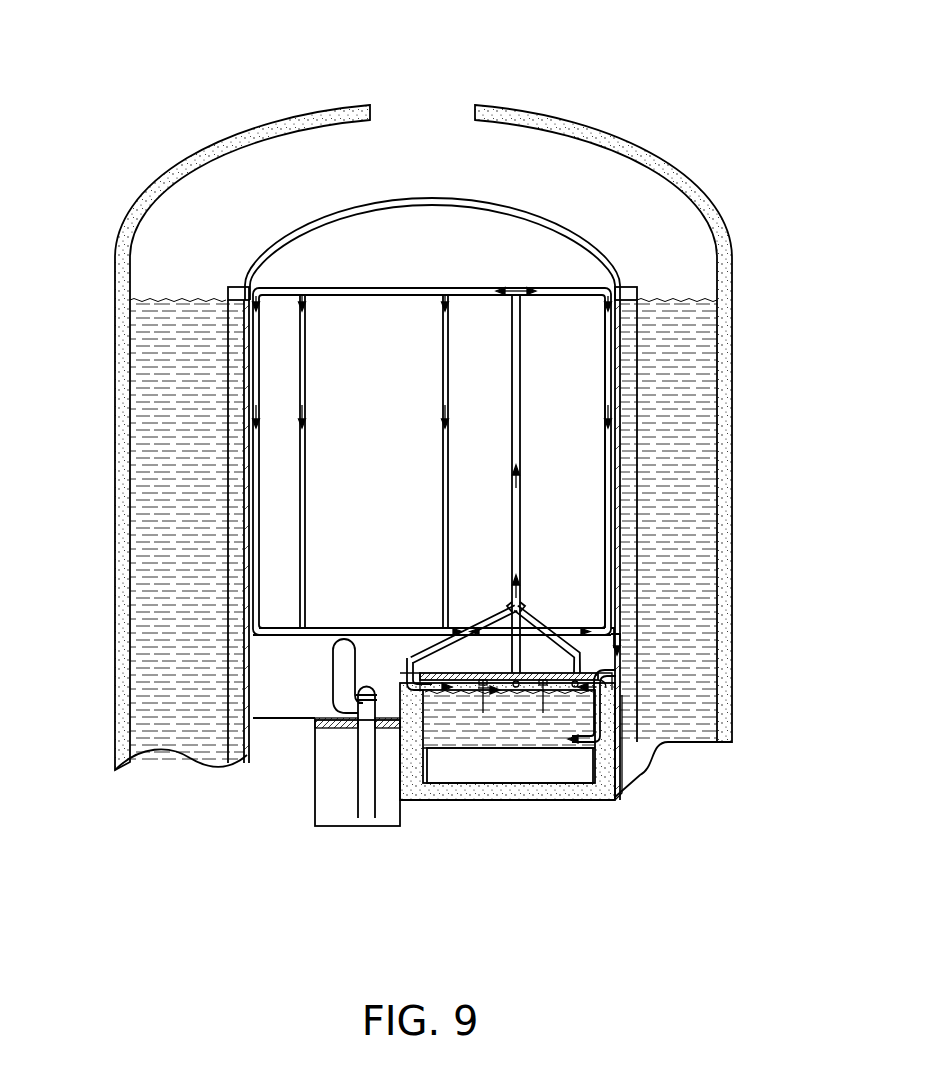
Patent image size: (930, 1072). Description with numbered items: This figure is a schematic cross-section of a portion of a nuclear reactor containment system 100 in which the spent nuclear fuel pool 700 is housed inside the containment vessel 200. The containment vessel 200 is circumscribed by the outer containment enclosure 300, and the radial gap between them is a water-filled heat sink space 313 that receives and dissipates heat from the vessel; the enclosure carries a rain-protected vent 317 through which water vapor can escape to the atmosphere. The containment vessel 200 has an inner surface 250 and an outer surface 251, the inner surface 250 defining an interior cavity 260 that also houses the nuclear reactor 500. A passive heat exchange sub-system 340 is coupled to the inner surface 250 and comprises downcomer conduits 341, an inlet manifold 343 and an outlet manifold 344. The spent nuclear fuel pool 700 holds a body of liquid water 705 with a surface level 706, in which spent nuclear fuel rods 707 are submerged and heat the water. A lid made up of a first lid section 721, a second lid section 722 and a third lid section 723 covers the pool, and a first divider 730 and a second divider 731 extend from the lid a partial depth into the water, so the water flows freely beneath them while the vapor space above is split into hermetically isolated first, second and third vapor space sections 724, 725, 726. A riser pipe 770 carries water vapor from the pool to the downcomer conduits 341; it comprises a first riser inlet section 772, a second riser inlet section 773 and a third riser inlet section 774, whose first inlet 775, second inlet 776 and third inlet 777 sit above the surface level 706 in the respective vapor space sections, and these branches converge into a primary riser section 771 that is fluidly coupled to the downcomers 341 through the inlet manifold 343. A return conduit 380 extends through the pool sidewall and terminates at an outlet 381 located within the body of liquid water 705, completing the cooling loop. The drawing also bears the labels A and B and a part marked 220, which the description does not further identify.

The nuclear reactor containment system 100 is at (203, 60).
The containment vessel 200 is at (630, 293).
The inner container 220 is at (228, 297).
The inner surface 250 is at (607, 337).
The outer surface 251 is at (622, 372).
The interior cavity 260 is at (446, 424).
The containment enclosure 300 is at (197, 160).
The heat sink space 313 is at (168, 732).
The rain-protected vent 317 is at (458, 85).
The passive heat exchange sub-system 340 is at (541, 275).
The downcomer conduit 341 is at (303, 355).
The inlet manifold 343 is at (472, 288).
The outlet manifold 344 is at (353, 633).
The return conduit 380 is at (622, 684).
The outlet 381 is at (562, 725).
The nuclear reactor 500 is at (345, 765).
The spent nuclear fuel pool 700 is at (600, 818).
The body of liquid water 705 is at (593, 735).
The surface level 706 is at (548, 629).
The spent nuclear fuel rod 707 is at (497, 722).
The first lid section 721 is at (467, 768).
The second lid section 722 is at (553, 730).
The third lid section 723 is at (598, 676).
The first vapor space section 724 is at (410, 670).
The second vapor space section 725 is at (455, 636).
The third vapor space section 726 is at (603, 690).
The first divider 730 is at (470, 770).
The second divider 731 is at (523, 690).
The riser pipe 770 is at (534, 605).
The primary riser section 771 is at (520, 537).
The first riser inlet section 772 is at (427, 657).
The second riser inlet section 773 is at (616, 653).
The third riser inlet section 774 is at (580, 658).
The first inlet 775 is at (440, 693).
The second inlet 776 is at (592, 730).
The third inlet 777 is at (608, 712).
The upward flow A is at (520, 490).
The downward flow B is at (346, 246).